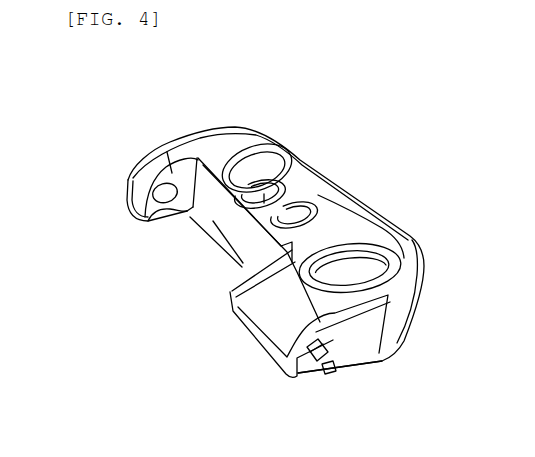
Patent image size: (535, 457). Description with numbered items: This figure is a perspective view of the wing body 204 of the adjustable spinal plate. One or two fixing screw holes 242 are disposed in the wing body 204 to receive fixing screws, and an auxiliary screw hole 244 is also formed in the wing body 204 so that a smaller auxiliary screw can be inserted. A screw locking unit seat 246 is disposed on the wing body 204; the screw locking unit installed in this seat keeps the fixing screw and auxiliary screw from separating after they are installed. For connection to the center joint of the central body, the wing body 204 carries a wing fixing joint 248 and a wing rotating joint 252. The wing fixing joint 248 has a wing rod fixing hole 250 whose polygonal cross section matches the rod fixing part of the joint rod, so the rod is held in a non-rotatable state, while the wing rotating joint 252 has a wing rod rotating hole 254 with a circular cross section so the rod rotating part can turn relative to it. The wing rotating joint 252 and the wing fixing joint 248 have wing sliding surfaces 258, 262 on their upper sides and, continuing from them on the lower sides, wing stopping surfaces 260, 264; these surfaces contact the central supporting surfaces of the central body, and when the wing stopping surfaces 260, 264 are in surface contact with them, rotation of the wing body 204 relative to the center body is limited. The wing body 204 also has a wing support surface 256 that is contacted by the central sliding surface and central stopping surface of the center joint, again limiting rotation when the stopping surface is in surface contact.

The wing body 204 is at (239, 108).
The fixing screw hole 242 is at (404, 220).
The auxiliary screw hole 244 is at (259, 149).
The screw locking unit seat 246 is at (317, 192).
The wing fixing joint 248 is at (320, 368).
The wing rod fixing hole 250 is at (325, 350).
The wing rotating joint 252 is at (164, 208).
The wing rod rotating hole 254 is at (173, 216).
The wing support surface 256 is at (213, 222).
The wing sliding surface 258 is at (268, 318).
The wing stopping surface 260 is at (275, 355).
The wing sliding surface 262 is at (128, 183).
The wing stopping surface 264 is at (128, 205).